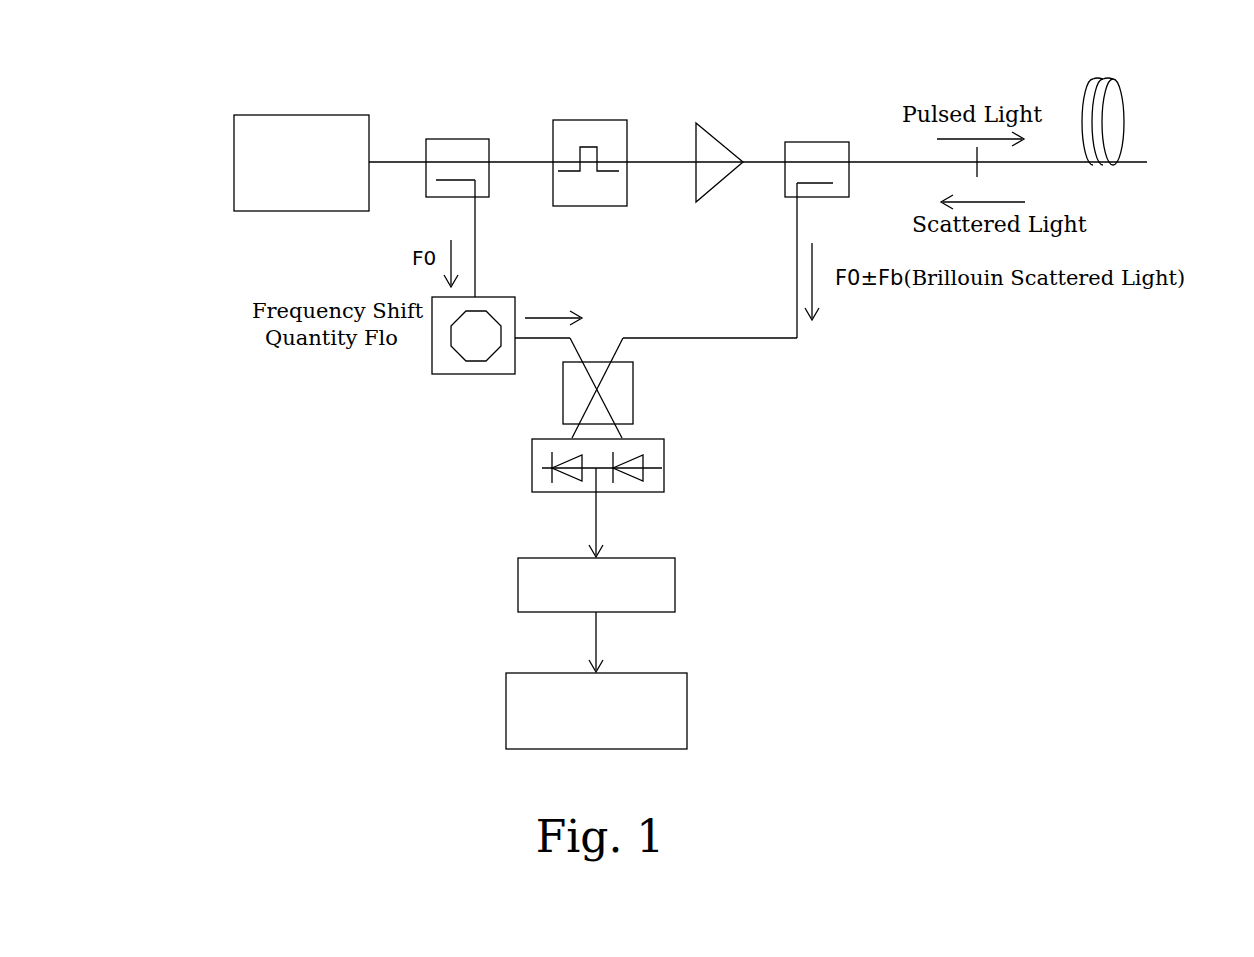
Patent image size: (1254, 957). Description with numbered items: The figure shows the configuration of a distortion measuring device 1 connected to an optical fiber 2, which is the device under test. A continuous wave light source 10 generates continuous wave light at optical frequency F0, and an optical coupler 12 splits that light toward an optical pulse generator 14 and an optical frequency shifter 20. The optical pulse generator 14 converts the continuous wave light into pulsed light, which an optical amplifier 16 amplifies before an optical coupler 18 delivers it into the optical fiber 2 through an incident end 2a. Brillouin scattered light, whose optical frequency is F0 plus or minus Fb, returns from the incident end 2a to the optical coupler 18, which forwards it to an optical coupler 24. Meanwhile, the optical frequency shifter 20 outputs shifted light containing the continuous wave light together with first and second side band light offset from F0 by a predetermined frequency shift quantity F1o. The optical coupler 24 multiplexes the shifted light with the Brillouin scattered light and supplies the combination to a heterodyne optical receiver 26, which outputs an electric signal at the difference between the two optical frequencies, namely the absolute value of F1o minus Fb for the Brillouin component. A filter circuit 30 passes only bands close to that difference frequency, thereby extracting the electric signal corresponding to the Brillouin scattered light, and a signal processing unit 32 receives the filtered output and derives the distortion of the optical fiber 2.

The distortion measuring device 1 is at (196, 100).
The optical fiber 2 is at (1124, 108).
The incident end 2a is at (980, 160).
The continuous wave light source 10 is at (330, 115).
The optical coupler 12 is at (489, 186).
The optical pulse generator 14 is at (573, 206).
The optical amplifier 16 is at (710, 188).
The optical coupler 18 is at (849, 186).
The optical frequency shifter 20 is at (497, 297).
The optical coupler 24 is at (633, 378).
The heterodyne optical receiver 26 is at (532, 463).
The filter circuit 30 is at (518, 585).
The signal processing unit 32 is at (525, 673).